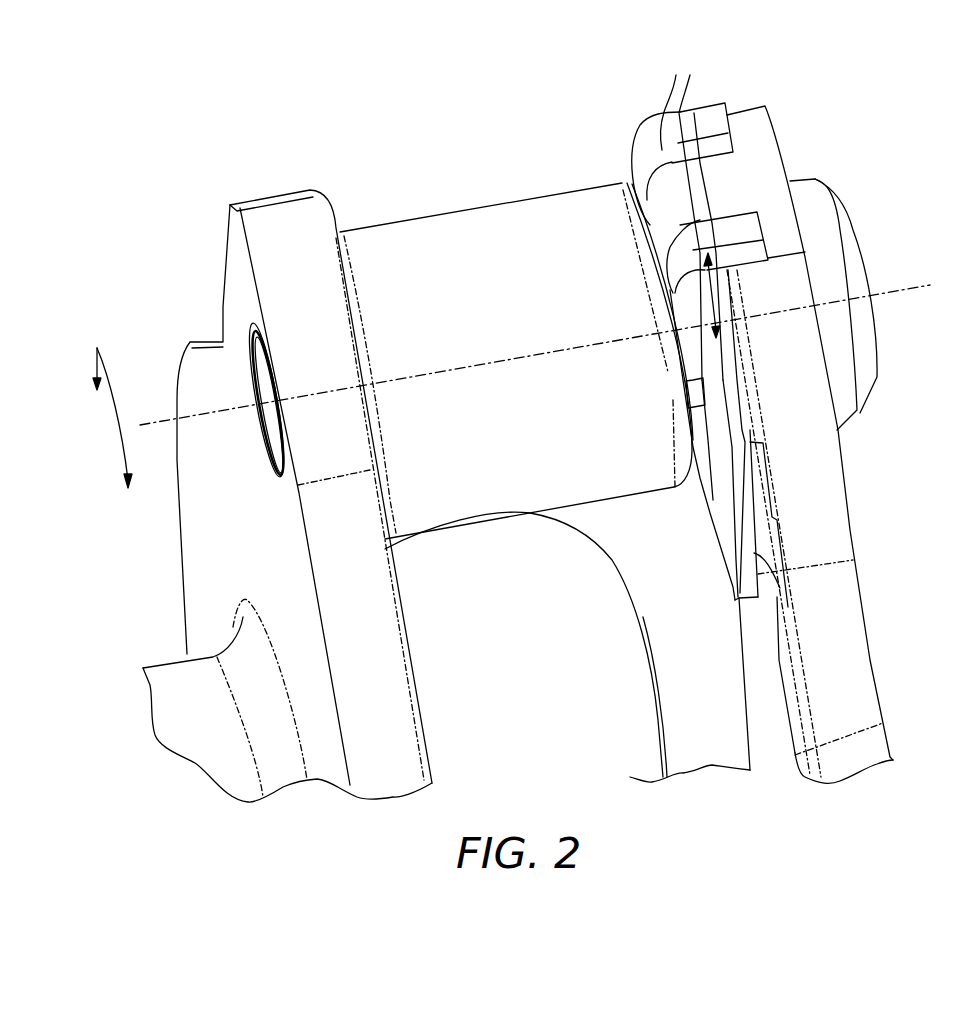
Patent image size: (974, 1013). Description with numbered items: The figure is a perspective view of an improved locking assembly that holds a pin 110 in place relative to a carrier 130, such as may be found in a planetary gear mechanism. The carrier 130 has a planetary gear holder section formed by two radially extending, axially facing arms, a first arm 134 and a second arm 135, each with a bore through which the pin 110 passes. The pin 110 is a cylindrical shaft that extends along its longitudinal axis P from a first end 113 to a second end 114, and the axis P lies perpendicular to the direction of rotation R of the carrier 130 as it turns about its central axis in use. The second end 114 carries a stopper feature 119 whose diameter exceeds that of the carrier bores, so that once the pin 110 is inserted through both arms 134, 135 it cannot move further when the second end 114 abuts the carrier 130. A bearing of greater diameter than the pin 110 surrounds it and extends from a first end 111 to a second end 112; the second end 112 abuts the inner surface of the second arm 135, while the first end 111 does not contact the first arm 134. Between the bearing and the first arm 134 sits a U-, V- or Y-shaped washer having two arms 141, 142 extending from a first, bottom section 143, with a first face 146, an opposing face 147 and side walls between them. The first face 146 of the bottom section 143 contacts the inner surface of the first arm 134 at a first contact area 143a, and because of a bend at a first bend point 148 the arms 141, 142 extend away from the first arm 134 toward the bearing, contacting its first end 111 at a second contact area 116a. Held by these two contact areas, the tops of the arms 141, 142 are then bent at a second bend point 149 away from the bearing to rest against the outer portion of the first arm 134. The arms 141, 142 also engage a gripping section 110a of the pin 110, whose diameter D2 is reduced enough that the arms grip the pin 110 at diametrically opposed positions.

The pin 110 is at (720, 297).
The gripping section 110a is at (723, 362).
The first end of the bearing 111 is at (628, 187).
The second end of the bearing 112 is at (342, 233).
The first end of the pin 113 is at (256, 354).
The second end of the pin 114 is at (818, 183).
The second contact area 116a is at (692, 216).
The stopper feature 119 is at (848, 228).
The carrier 130 is at (830, 458).
The first arm 134 is at (843, 540).
The second arm 135 is at (274, 212).
The arm of the washer 141 is at (752, 196).
The arm of the washer 142 is at (718, 110).
The first section of the washer 143 is at (737, 580).
The first contact area 143a is at (780, 520).
The first face of the washer 146 is at (780, 588).
The opposing face of the washer 147 is at (720, 520).
The first bend point 148 is at (750, 442).
The second bend point 149 is at (644, 134).
The reduced diameter D2 is at (700, 301).
The direction of rotation R is at (110, 405).
The longitudinal axis of the pin P is at (543, 350).